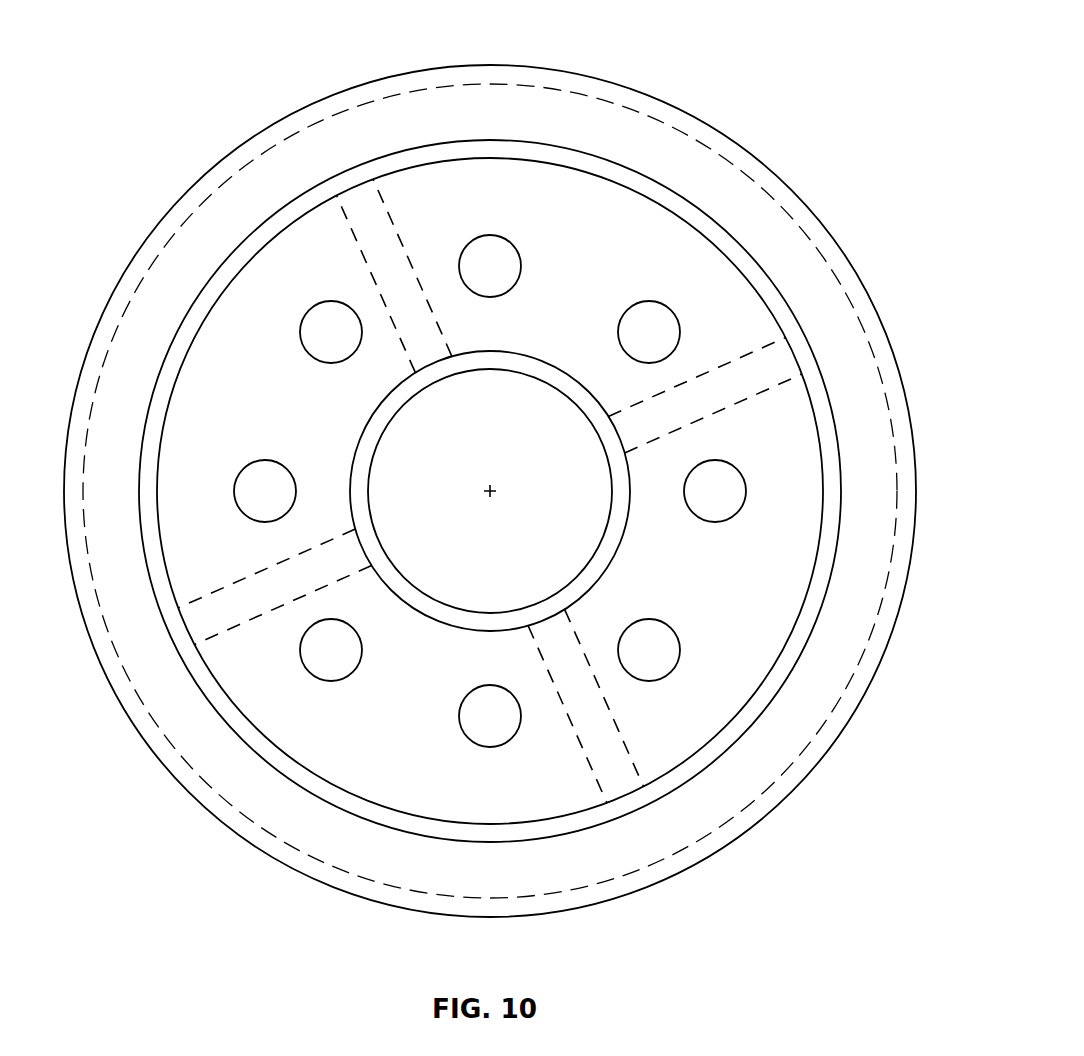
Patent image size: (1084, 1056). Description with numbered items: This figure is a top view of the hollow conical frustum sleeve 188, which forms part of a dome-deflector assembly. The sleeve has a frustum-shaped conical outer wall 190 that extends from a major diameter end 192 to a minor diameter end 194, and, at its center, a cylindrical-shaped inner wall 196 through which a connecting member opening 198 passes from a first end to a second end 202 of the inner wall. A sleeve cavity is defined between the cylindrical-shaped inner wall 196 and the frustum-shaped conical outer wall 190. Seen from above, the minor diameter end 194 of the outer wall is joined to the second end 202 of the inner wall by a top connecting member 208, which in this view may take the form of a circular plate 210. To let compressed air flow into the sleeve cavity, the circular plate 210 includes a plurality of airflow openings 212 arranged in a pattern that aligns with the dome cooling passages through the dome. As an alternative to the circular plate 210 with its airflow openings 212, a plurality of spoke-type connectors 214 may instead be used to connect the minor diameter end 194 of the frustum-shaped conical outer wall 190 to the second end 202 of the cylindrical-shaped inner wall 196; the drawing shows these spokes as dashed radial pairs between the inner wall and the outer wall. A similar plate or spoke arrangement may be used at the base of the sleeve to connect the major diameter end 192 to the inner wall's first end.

The hollow conical frustum sleeve 188 is at (730, 52).
The frustum-shaped conical outer wall 190 is at (747, 210).
The major diameter end 192 is at (812, 240).
The minor diameter end 194 is at (573, 167).
The cylindrical-shaped inner wall 196 is at (627, 530).
The connecting member opening 198 is at (452, 453).
The second end 202 is at (505, 352).
The top connecting member 208 is at (777, 358).
The circular plate 210 is at (767, 620).
The airflow openings 212 is at (487, 232).
The spoke-type connectors 214 is at (217, 625).